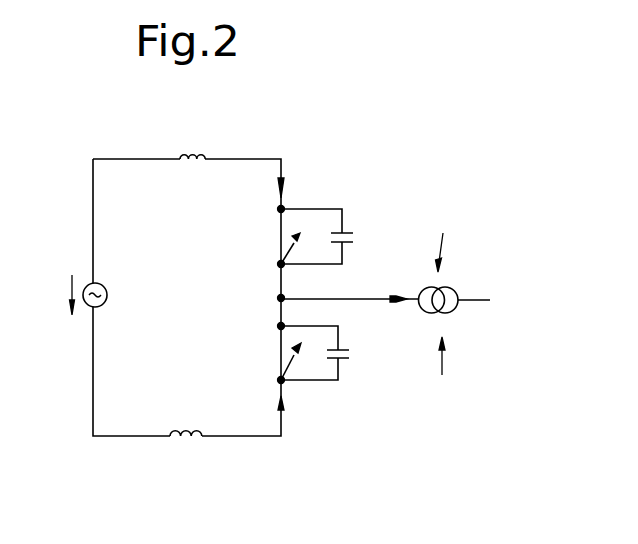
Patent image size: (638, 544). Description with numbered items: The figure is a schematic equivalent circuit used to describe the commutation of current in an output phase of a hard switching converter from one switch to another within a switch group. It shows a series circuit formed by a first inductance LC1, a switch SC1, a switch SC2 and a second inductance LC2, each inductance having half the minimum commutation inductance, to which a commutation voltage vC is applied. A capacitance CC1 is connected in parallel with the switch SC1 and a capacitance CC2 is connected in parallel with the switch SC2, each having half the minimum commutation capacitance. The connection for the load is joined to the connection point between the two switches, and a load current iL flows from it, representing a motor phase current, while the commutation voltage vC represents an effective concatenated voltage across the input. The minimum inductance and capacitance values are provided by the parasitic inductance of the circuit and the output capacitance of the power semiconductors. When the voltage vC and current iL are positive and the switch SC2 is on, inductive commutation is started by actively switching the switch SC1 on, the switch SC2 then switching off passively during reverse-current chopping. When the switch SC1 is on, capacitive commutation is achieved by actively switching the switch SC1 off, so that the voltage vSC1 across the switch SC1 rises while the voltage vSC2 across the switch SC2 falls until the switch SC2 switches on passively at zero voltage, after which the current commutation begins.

The inductance L_Cmin/2 LC1 is at (202, 135).
The inductance L_Cmin/2 LC2 is at (197, 412).
The commutation voltage vC is at (105, 298).
The switch SC1 is at (261, 238).
The switch SC2 is at (260, 359).
The capacitance C_Cmin/2 CC1 is at (360, 236).
The capacitance C_Cmin/2 CC2 is at (356, 353).
The voltage across switch SC1 vSC1 is at (465, 251).
The voltage across switch SC2 vSC2 is at (469, 359).
The load current iL is at (385, 287).